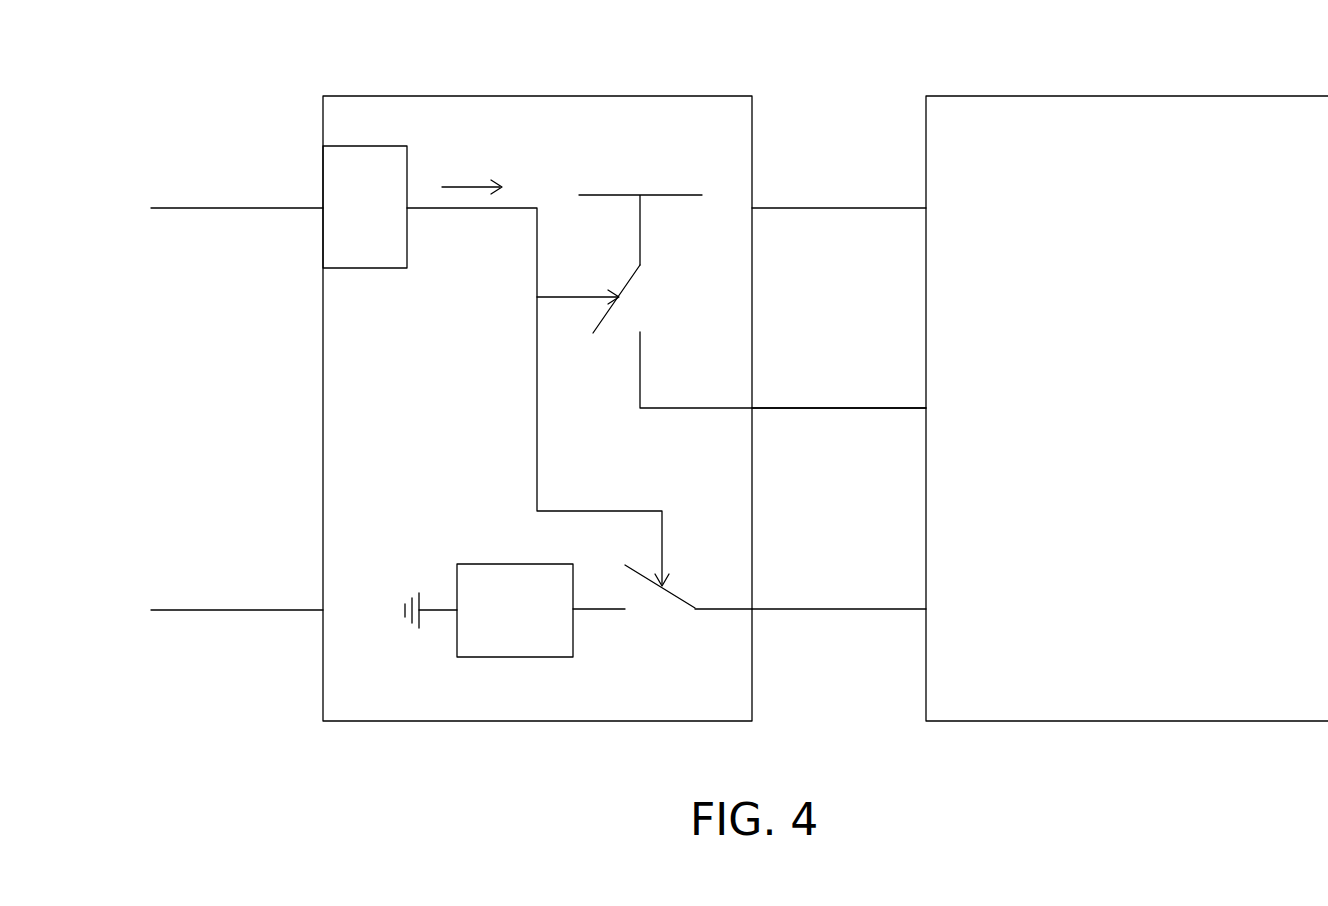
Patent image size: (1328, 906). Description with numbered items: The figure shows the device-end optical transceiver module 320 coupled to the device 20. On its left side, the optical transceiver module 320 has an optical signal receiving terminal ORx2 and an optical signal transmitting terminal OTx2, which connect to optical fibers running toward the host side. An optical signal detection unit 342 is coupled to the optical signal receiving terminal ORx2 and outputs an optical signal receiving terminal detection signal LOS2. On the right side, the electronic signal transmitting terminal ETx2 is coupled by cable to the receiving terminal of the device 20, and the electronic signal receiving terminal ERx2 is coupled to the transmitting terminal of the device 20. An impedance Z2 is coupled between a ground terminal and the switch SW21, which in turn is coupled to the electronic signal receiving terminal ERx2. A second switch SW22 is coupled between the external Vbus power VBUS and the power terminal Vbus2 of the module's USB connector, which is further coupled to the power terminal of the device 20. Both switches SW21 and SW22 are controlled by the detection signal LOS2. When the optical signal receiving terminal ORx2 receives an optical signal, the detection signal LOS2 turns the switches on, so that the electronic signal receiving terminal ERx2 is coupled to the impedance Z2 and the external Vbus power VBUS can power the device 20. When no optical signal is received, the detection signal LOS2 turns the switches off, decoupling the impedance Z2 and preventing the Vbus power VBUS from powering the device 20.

The optical transceiver module 320 is at (537, 95).
The device 20 is at (1141, 95).
The optical signal detection unit 342 is at (365, 272).
The switch SW21 is at (653, 607).
The switch SW22 is at (639, 302).
The impedance Z2 is at (515, 610).
The optical signal receiving terminal ORx2 is at (237, 206).
The optical signal transmitting terminal OTx2 is at (237, 608).
The optical signal receiving terminal detection signal LOS2 is at (472, 184).
The external Vbus power VBUS is at (640, 213).
The electronic signal transmitting terminal ETx2 is at (838, 206).
The electronic signal receiving terminal ERx2 is at (840, 608).
The power terminal Vbus2 is at (840, 407).